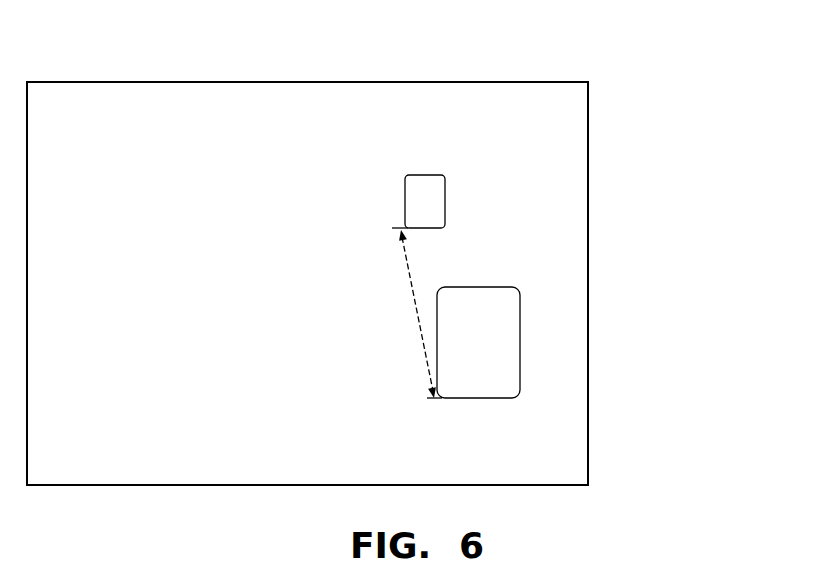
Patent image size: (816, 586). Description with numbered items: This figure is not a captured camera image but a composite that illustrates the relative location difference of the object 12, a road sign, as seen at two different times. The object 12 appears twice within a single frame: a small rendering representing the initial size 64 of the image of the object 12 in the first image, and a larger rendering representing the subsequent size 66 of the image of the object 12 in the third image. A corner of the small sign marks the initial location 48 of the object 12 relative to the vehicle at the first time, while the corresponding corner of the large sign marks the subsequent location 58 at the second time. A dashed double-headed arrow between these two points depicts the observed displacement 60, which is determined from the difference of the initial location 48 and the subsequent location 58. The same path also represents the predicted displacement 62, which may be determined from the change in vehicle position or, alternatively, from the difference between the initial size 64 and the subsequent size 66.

The object 12 is at (509, 245).
The initial size 64 is at (452, 171).
The subsequent size 66 is at (503, 399).
The initial location 48 is at (404, 226).
The subsequent location 58 is at (435, 399).
The observed displacement 60 is at (370, 314).
The predicted displacement 62 is at (417, 318).